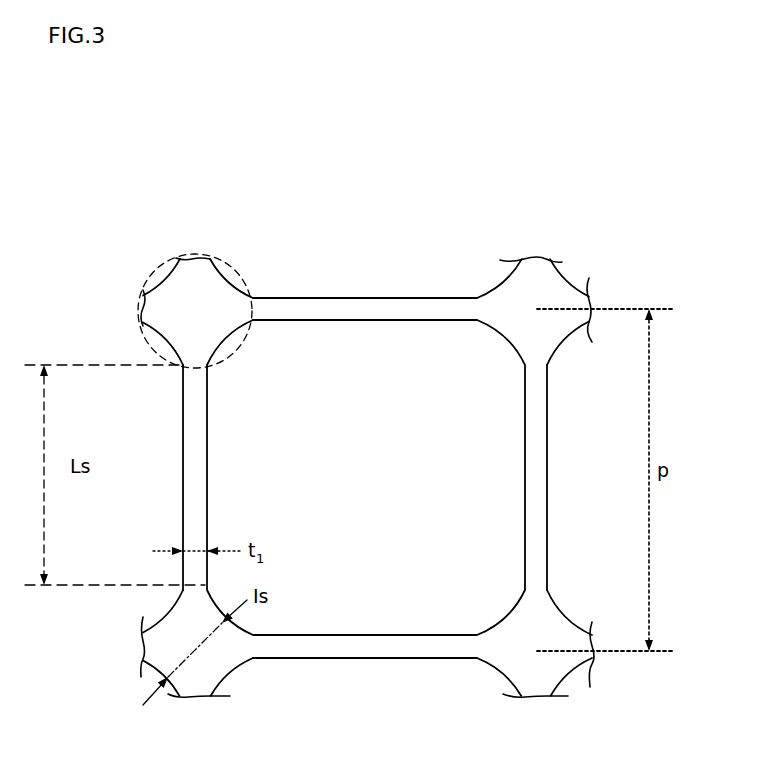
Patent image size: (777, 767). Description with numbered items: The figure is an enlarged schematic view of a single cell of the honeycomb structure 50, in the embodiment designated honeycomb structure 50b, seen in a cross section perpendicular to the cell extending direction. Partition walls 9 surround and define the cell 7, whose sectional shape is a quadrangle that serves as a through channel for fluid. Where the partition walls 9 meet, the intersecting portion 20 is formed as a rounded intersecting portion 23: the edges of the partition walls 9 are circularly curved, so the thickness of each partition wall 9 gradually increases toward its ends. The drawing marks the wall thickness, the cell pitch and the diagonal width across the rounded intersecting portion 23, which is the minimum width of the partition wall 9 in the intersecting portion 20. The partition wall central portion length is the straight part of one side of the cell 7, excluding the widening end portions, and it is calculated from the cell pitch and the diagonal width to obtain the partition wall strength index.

The honeycomb structure 50 is at (585, 111).
The honeycomb structure 50b is at (366, 449).
The cell 7 is at (377, 386).
The partition wall 9 is at (328, 306).
The intersecting portion 20 is at (217, 284).
The rounded intersecting portion 23 is at (242, 276).